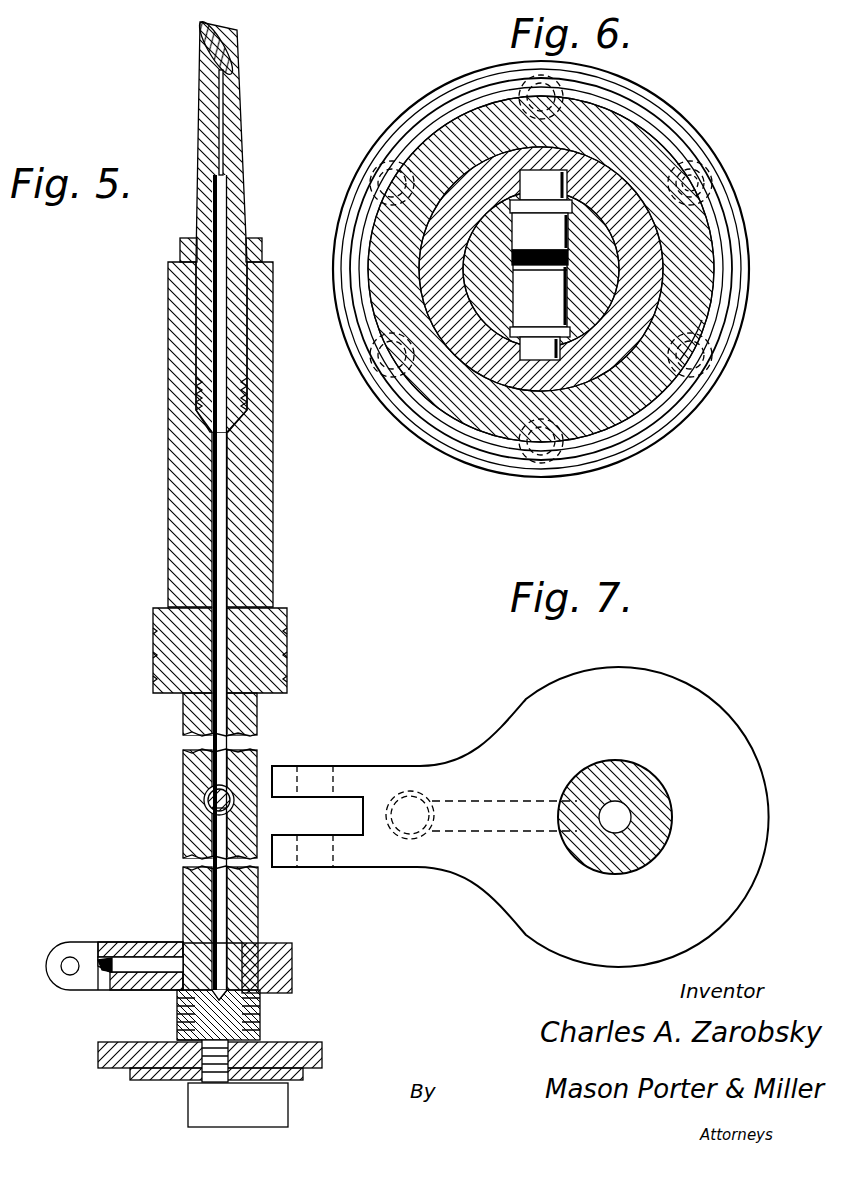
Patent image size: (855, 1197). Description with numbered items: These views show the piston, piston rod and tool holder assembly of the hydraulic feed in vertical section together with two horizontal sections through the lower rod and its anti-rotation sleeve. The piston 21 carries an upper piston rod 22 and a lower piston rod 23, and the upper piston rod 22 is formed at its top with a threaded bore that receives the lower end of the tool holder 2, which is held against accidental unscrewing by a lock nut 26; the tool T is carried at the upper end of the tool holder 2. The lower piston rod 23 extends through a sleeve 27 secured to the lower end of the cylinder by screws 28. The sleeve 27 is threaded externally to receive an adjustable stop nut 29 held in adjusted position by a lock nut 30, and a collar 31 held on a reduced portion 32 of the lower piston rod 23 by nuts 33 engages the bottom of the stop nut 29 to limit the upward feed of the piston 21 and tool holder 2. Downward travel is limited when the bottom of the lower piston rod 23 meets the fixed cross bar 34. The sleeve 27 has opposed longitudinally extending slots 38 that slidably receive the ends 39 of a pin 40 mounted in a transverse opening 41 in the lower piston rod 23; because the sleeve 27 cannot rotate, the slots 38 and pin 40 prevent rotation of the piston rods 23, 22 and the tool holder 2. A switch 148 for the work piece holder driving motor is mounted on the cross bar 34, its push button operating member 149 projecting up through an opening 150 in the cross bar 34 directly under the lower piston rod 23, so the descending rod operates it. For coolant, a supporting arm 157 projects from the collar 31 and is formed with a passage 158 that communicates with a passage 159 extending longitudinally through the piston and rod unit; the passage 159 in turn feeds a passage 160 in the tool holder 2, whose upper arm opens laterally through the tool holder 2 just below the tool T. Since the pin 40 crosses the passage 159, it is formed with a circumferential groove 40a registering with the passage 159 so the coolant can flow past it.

In FIG. 5, the tool T is at (200, 28).
In FIG. 5, the tool holder 2 is at (240, 132).
In FIG. 5, the lock nut 26 is at (262, 246).
In FIG. 5, the passage 160 is at (222, 338).
In FIG. 5, the upper piston rod 22 is at (182, 538).
In FIG. 5, the piston 21 is at (175, 620).
In FIG. 5, the lower piston rod 23 is at (190, 758).
In FIG. 6, the lower piston rod 23 is at (445, 385).
In FIG. 7, the lower piston rod 23 is at (648, 858).
In FIG. 5, the transverse opening 41 is at (205, 790).
In FIG. 6, the transverse opening 41 is at (703, 330).
In FIG. 5, the pin 40 is at (208, 800).
In FIG. 6, the pin 40 is at (525, 352).
In FIG. 5, the circumferential groove 40a is at (210, 810).
In FIG. 6, the circumferential groove 40a is at (515, 268).
In FIG. 5, the passage 159 is at (222, 893).
In FIG. 6, the passage 159 is at (700, 174).
In FIG. 7, the passage 159 is at (628, 808).
In FIG. 5, the collar 31 is at (266, 948).
In FIG. 7, the collar 31 is at (708, 712).
In FIG. 5, the reduced portion 32 is at (295, 950).
In FIG. 5, the nuts 33 is at (262, 1012).
In FIG. 5, the opening 150 is at (252, 1044).
In FIG. 5, the push button operating member 149 is at (192, 1052).
In FIG. 5, the cross bar 34 is at (324, 1053).
In FIG. 5, the switch 148 is at (290, 1108).
In FIG. 5, the supporting arm 157 is at (83, 945).
In FIG. 7, the supporting arm 157 is at (372, 770).
In FIG. 5, the passage 158 is at (152, 958).
In FIG. 7, the passage 158 is at (500, 793).
In FIG. 6, the slots 38 is at (515, 165).
In FIG. 6, the screws 28 is at (382, 165).
In FIG. 6, the ends of pin 39 is at (566, 165).
In FIG. 6, the sleeve 27 is at (600, 150).
In FIG. 6, the lock nut 30 is at (680, 137).
In FIG. 6, the stop nut 29 is at (695, 222).